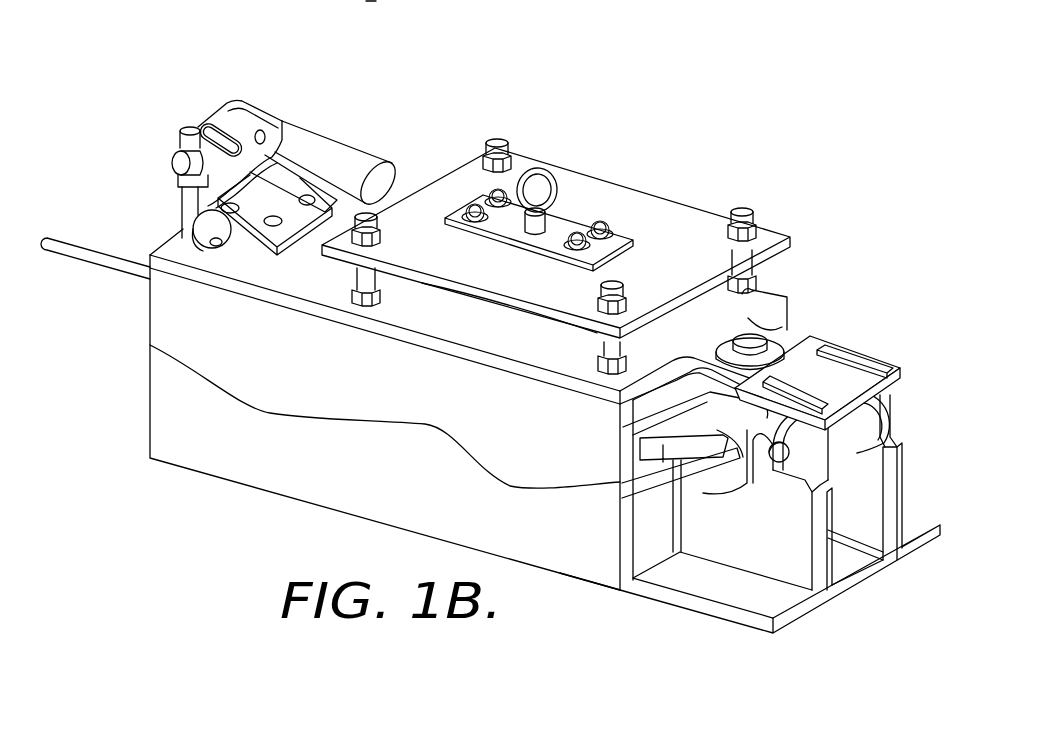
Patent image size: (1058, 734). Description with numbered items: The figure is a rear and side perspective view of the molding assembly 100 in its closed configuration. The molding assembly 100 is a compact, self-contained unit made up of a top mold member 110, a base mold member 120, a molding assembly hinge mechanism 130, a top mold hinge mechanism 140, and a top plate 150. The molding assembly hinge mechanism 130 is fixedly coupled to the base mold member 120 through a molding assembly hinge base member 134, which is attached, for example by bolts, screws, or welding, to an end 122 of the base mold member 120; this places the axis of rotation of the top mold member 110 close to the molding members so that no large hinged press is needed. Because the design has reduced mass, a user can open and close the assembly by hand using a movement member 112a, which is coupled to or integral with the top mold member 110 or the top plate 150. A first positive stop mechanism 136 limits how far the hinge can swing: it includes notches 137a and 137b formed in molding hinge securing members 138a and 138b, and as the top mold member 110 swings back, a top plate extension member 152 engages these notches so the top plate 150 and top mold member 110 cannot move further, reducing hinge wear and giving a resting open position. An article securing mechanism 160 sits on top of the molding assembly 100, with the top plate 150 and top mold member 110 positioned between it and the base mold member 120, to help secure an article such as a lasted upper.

The molding assembly 100 is at (120, 79).
The top mold member 110 is at (150, 298).
The movement member 112a is at (64, 242).
The base mold member 120 is at (150, 400).
The end of the base mold member 122 is at (620, 570).
The molding assembly hinge mechanism 130 is at (836, 622).
The molding assembly hinge base member 134 is at (656, 593).
The first positive stop mechanism 136 is at (904, 423).
The notch 137a is at (798, 482).
The notch 137b is at (900, 437).
The molding hinge securing member 138a is at (792, 560).
The molding hinge securing member 138b is at (863, 500).
The top mold hinge mechanism 140 is at (803, 313).
The top plate 150 is at (180, 245).
The top plate extension member 152 is at (880, 368).
The article securing mechanism 160 is at (644, 171).